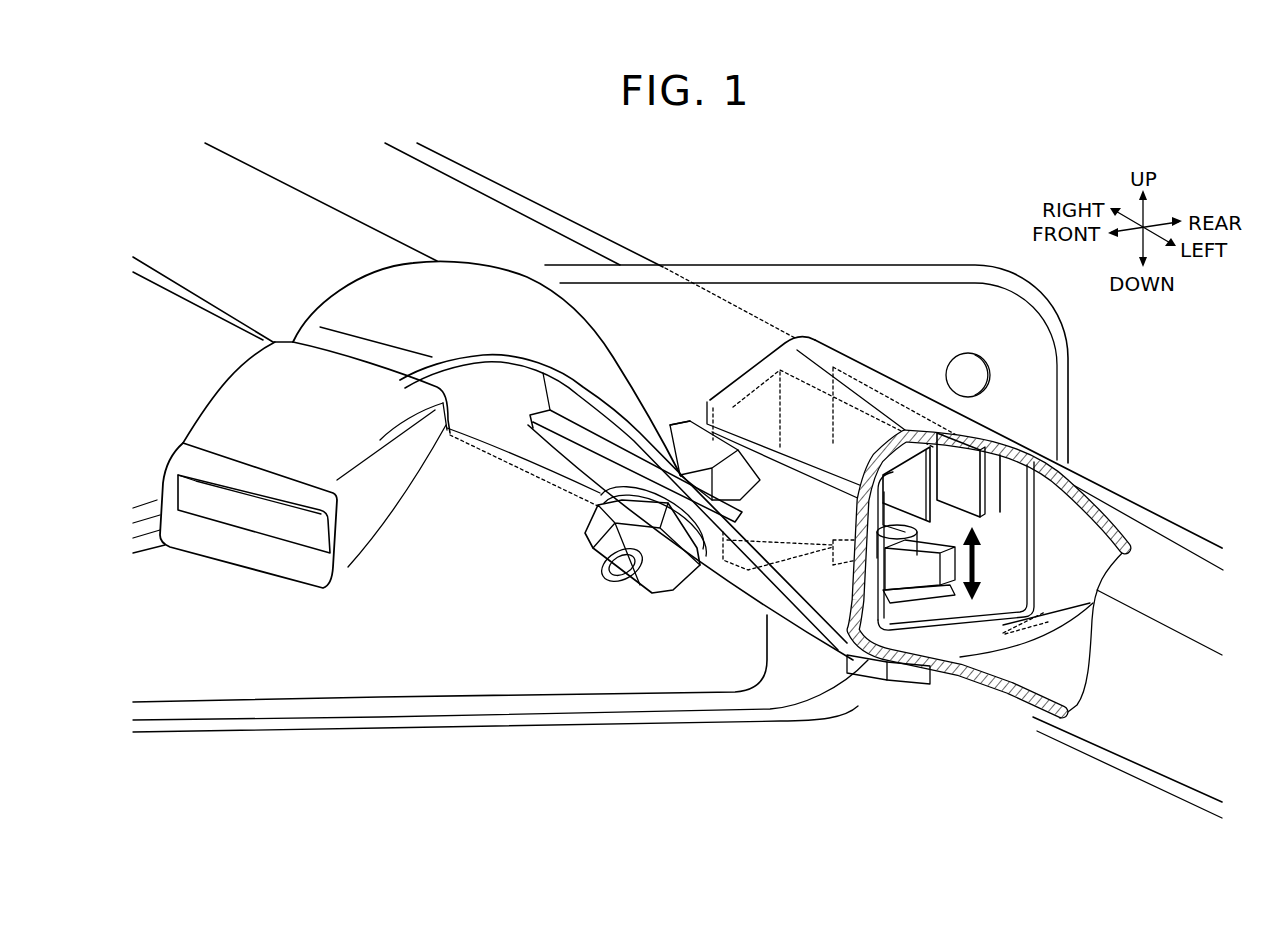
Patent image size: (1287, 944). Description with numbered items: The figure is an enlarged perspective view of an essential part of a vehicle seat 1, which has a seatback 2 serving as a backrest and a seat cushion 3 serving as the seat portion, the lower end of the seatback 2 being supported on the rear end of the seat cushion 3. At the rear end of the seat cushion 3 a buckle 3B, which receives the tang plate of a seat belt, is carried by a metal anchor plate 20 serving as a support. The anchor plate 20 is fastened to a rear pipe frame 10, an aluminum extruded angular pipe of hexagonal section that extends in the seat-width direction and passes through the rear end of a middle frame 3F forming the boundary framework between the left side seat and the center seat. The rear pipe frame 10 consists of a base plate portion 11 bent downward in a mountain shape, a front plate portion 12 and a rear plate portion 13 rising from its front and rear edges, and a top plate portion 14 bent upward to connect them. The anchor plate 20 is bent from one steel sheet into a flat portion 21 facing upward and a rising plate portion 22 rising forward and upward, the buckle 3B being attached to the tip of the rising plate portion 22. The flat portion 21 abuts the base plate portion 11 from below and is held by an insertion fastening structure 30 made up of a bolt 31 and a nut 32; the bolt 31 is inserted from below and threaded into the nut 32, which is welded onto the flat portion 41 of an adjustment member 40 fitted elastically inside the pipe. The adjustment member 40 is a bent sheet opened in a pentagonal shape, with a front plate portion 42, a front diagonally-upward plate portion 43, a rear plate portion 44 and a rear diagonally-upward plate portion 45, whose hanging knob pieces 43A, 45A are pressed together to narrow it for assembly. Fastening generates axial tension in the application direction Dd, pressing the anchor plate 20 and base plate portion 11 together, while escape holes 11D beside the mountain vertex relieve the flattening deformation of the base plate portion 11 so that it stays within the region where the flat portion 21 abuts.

The seat 1 is at (614, 194).
The seatback 2 is at (808, 185).
The seat cushion 3 is at (168, 391).
The buckle 3B is at (254, 572).
The middle frame 3F is at (906, 296).
The rear pipe frame 10 is at (1170, 522).
The base plate portion 11 is at (1058, 677).
The escape holes 11D is at (967, 645).
The front plate portion 12 is at (1137, 737).
The rear plate portion 13 is at (1053, 507).
The top plate portion 14 is at (1137, 513).
The anchor plate 20 is at (757, 592).
The flat portion 21 is at (1050, 625).
The rising plate portion 22 is at (720, 578).
The insertion fastening structure 30 is at (930, 767).
The bolt 31 is at (862, 667).
The nut 32 is at (912, 660).
The adjustment member 40 is at (1022, 478).
The flat portion 41 is at (983, 612).
The front plate portion 42 is at (868, 510).
The front diagonally-upward plate portion 43 is at (905, 445).
The knob piece 43A is at (907, 490).
The rear plate portion 44 is at (1013, 540).
The rear diagonally-upward plate portion 45 is at (1007, 477).
The knob piece 45A is at (953, 460).
The application direction of axial tension Dd is at (998, 563).